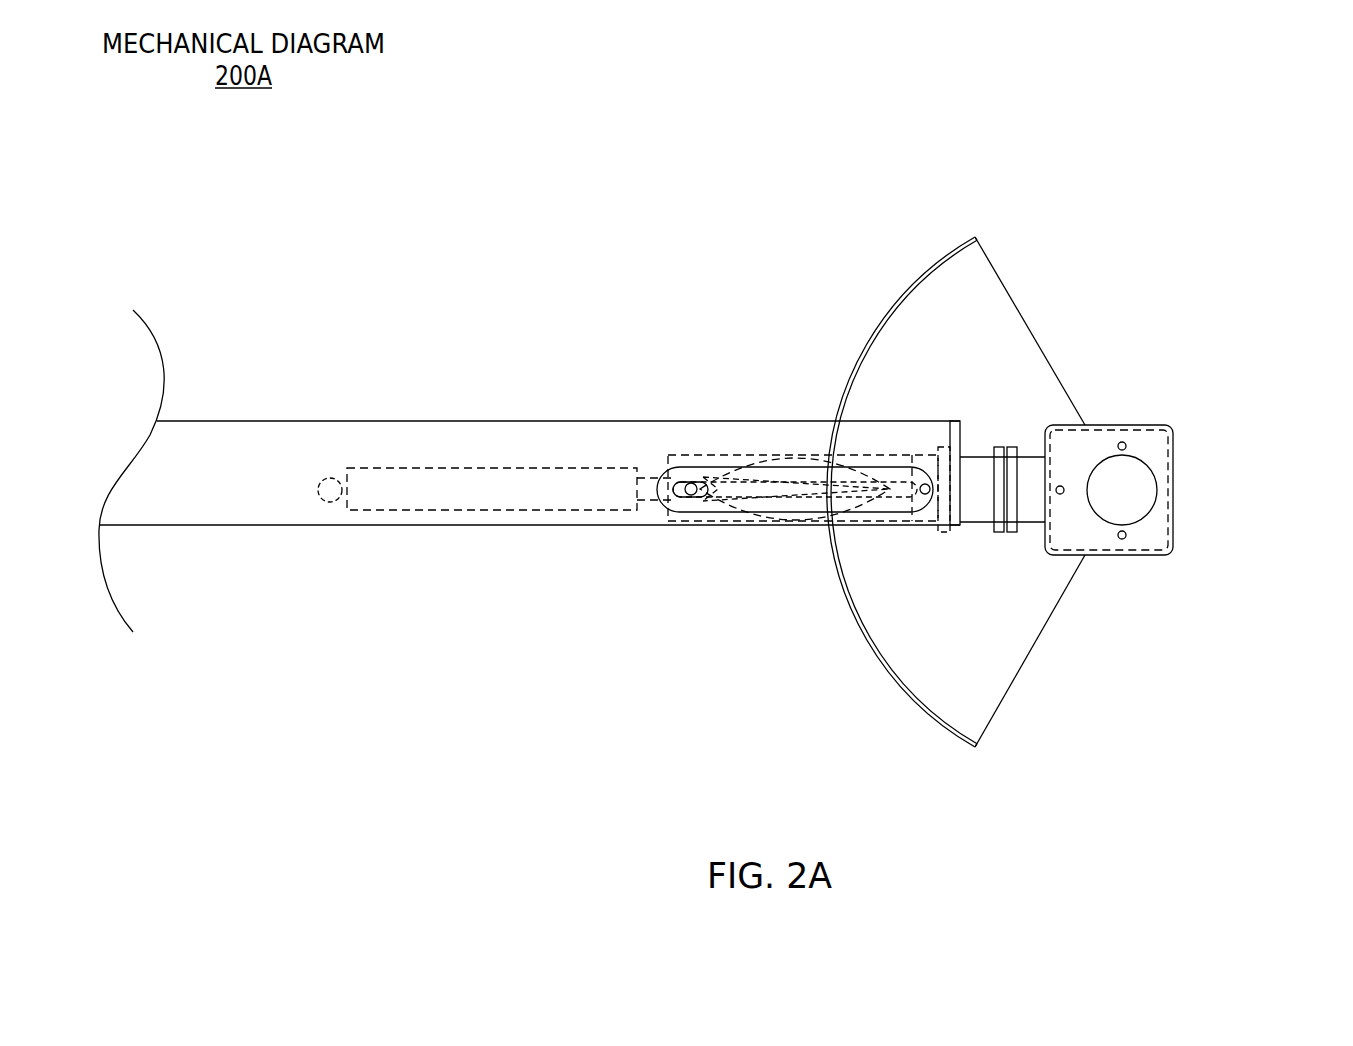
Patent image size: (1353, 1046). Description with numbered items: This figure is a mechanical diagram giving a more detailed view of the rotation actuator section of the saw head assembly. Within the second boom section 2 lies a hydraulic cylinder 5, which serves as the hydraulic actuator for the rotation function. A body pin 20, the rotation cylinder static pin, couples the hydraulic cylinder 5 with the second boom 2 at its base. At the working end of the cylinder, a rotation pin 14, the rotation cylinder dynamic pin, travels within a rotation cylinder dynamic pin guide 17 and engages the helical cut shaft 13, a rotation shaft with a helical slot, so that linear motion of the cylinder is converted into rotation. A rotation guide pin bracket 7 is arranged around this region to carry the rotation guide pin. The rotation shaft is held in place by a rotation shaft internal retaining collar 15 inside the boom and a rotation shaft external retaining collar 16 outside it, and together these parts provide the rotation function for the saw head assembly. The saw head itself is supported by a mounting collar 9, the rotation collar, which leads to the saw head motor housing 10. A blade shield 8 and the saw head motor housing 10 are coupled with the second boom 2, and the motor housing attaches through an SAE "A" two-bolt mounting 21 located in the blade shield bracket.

The second boom section 2 is at (408, 422).
The hydraulic cylinder 5 is at (505, 490).
The rotation guide pin bracket 7 is at (678, 463).
The blade shield 8 is at (942, 328).
The mounting collar 9 is at (975, 488).
The saw head motor housing 10 is at (1152, 450).
The helical cut shaft 13 is at (717, 518).
The rotation pin 14 is at (693, 482).
The rotation shaft internal retaining collar 15 is at (937, 447).
The rotation shaft external retaining collar 16 is at (1018, 445).
The rotation cylinder dynamic pin guide 17 is at (680, 512).
The body pin 20 is at (333, 492).
The SAE "A" 2-bolt mounting 21 is at (1123, 491).